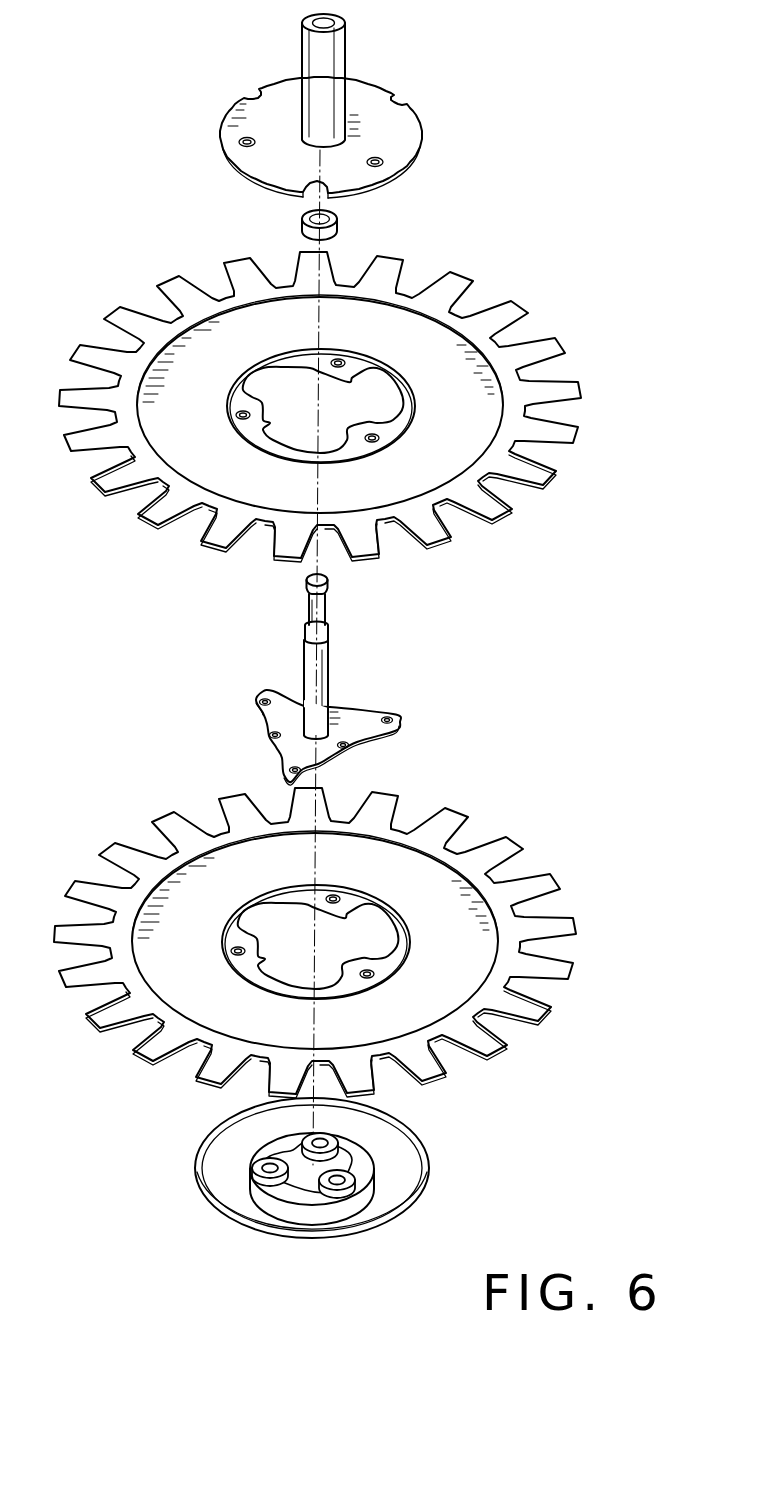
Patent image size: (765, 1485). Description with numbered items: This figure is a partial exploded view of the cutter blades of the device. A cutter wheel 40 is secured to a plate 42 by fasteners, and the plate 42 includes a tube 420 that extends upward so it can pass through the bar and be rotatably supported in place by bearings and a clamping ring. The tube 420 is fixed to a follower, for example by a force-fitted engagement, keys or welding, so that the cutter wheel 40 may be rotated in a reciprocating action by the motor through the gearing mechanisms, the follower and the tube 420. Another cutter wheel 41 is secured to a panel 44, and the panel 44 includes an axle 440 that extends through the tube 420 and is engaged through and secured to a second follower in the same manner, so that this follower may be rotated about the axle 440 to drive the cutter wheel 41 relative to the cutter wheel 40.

The cutter wheel 40 is at (531, 347).
The cutter wheel 41 is at (503, 843).
The plate 42 is at (420, 131).
The tube 420 is at (345, 57).
The panel 44 is at (366, 722).
The axle 440 is at (331, 647).